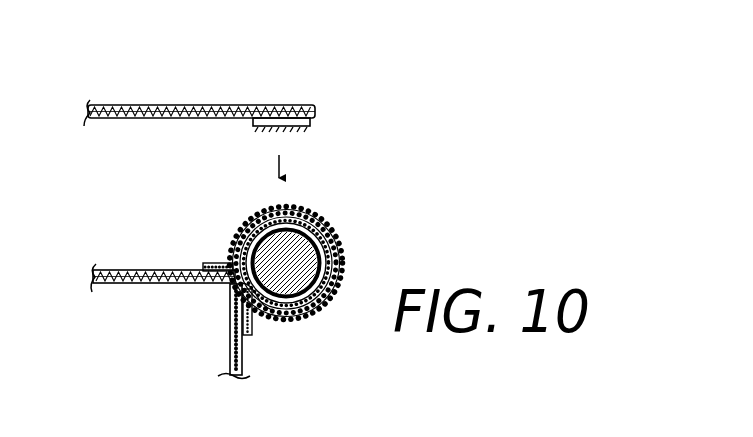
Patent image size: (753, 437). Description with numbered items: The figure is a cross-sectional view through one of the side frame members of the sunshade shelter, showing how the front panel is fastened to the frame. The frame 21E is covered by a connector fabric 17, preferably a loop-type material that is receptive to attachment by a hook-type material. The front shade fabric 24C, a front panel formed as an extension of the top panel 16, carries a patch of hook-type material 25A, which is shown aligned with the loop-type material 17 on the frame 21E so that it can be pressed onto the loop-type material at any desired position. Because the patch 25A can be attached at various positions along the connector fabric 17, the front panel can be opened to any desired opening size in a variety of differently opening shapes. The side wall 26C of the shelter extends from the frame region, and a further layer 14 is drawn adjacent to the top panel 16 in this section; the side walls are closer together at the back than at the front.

The front shade fabric 24C is at (162, 113).
The patch of hook-type material 25A is at (310, 126).
The top panel 16 is at (100, 293).
The fabric layer 14 is at (163, 254).
The connector fabric 17 is at (252, 216).
The frame 21E is at (303, 206).
The side wall 26C is at (240, 355).